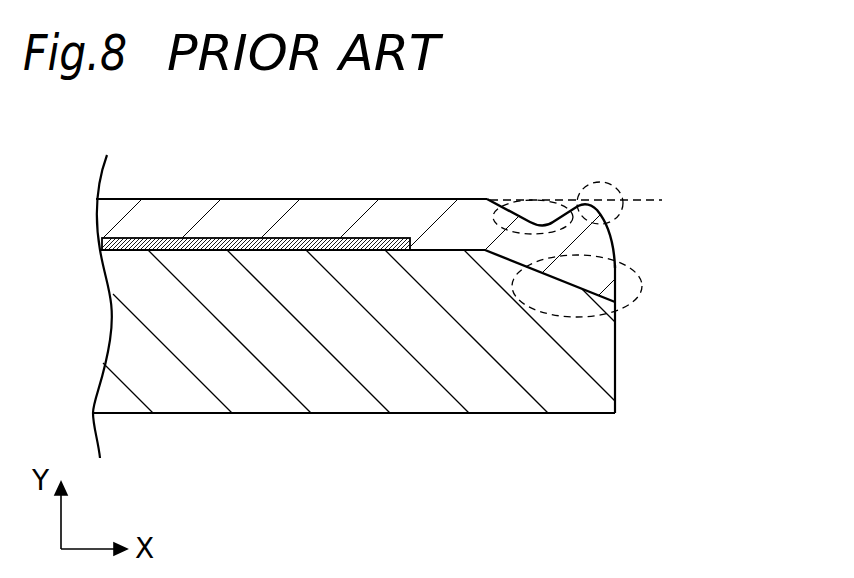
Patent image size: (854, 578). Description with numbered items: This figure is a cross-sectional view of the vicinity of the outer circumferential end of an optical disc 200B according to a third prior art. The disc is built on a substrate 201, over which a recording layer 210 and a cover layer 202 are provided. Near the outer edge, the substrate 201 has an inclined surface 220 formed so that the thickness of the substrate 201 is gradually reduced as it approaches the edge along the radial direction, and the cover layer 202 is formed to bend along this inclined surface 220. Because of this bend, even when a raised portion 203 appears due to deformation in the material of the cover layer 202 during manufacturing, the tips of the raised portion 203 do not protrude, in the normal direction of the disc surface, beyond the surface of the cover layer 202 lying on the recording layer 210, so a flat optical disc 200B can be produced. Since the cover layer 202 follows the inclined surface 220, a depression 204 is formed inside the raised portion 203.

The optical disc 200B is at (744, 126).
The substrate 201 is at (354, 385).
The cover layer 202 is at (327, 225).
The raised portion 203 is at (600, 183).
The depression 204 is at (527, 200).
The recording layer 210 is at (186, 247).
The inclined surface 220 is at (642, 283).